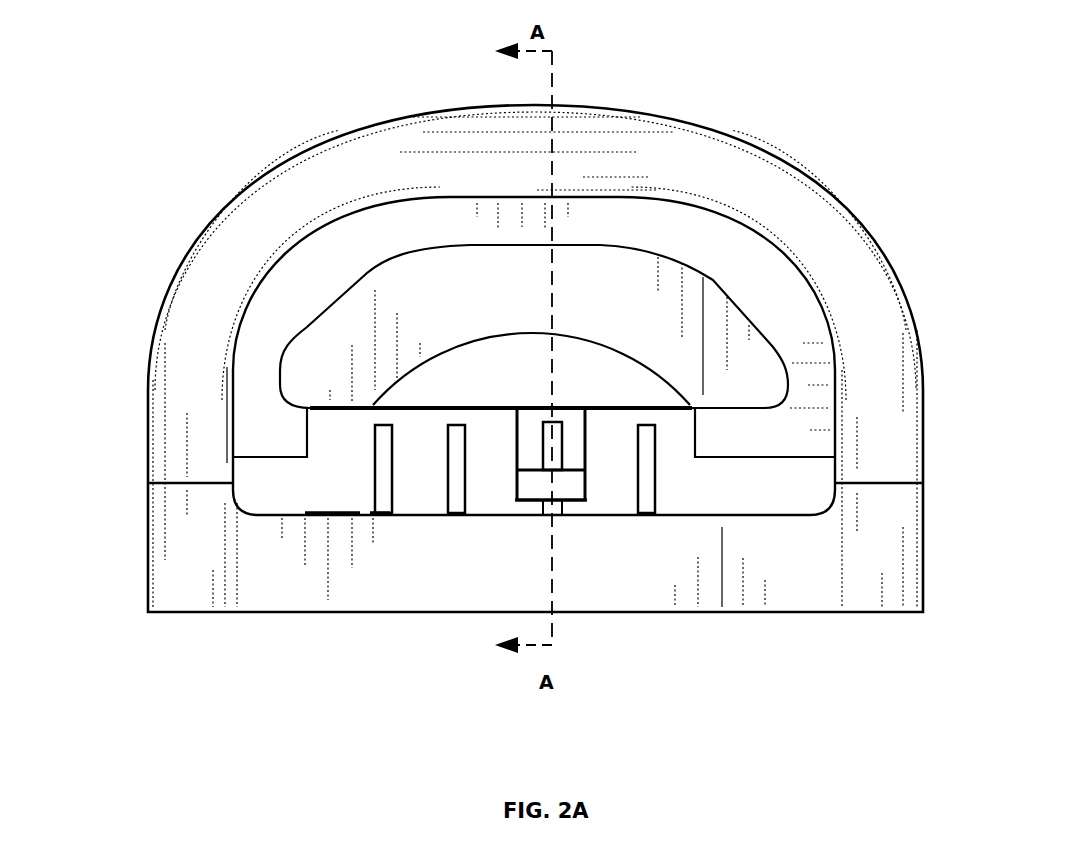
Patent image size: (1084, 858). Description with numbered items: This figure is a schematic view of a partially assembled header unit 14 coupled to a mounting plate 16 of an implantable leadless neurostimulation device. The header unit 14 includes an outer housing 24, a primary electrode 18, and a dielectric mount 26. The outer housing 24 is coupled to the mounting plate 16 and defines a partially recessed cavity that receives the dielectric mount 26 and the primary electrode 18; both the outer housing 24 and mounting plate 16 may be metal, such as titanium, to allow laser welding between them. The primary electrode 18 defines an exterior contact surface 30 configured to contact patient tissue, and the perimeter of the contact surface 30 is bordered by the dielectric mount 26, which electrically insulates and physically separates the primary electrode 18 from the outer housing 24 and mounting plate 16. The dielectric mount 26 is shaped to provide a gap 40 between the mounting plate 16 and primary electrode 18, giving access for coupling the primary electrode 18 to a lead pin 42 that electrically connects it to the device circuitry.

The header unit 14 is at (875, 168).
The mounting plate 16 is at (177, 563).
The primary electrode 18 is at (467, 317).
The outer housing 24 is at (195, 320).
The dielectric mount 26 is at (330, 267).
The exterior contact surface 30 is at (538, 313).
The gap 40 is at (628, 461).
The lead pin 42 is at (547, 455).